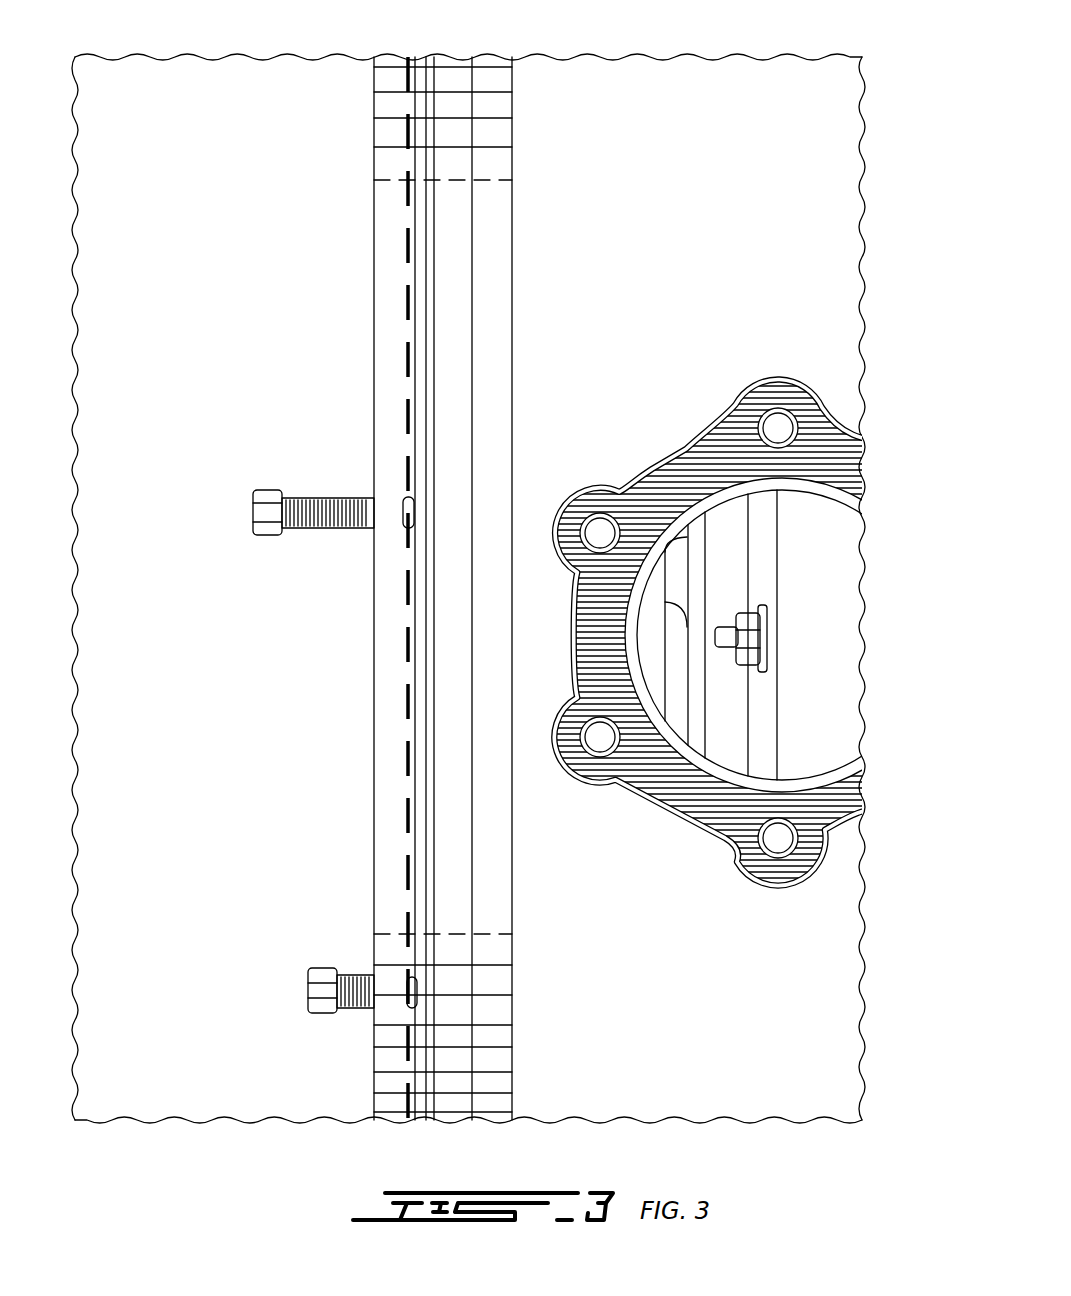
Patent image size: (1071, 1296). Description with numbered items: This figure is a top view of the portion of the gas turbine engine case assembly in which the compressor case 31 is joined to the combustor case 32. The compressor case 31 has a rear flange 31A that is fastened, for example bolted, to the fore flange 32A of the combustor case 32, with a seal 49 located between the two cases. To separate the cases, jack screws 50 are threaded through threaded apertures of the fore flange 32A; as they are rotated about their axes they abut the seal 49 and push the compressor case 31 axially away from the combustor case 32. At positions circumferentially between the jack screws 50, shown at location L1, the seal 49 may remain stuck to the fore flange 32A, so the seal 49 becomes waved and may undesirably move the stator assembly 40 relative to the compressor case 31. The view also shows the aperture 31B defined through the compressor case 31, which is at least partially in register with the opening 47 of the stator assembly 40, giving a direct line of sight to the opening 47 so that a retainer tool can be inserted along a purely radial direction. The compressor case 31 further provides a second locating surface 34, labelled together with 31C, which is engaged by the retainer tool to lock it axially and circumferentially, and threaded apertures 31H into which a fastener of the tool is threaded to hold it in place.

The compressor case 31 is at (623, 265).
The rear flange 31A is at (475, 345).
The aperture 31B is at (803, 542).
The mounting flange 31C is at (665, 550).
The second locating surface 34 is at (725, 629).
The threaded apertures 31H is at (602, 527).
The combustor case 32 is at (308, 272).
The fore flange 32A is at (388, 803).
The stator assembly 40 is at (698, 583).
The opening 47 is at (673, 662).
The seal 49 is at (425, 687).
The jack screws 50 is at (268, 513).
The location L1 is at (405, 228).